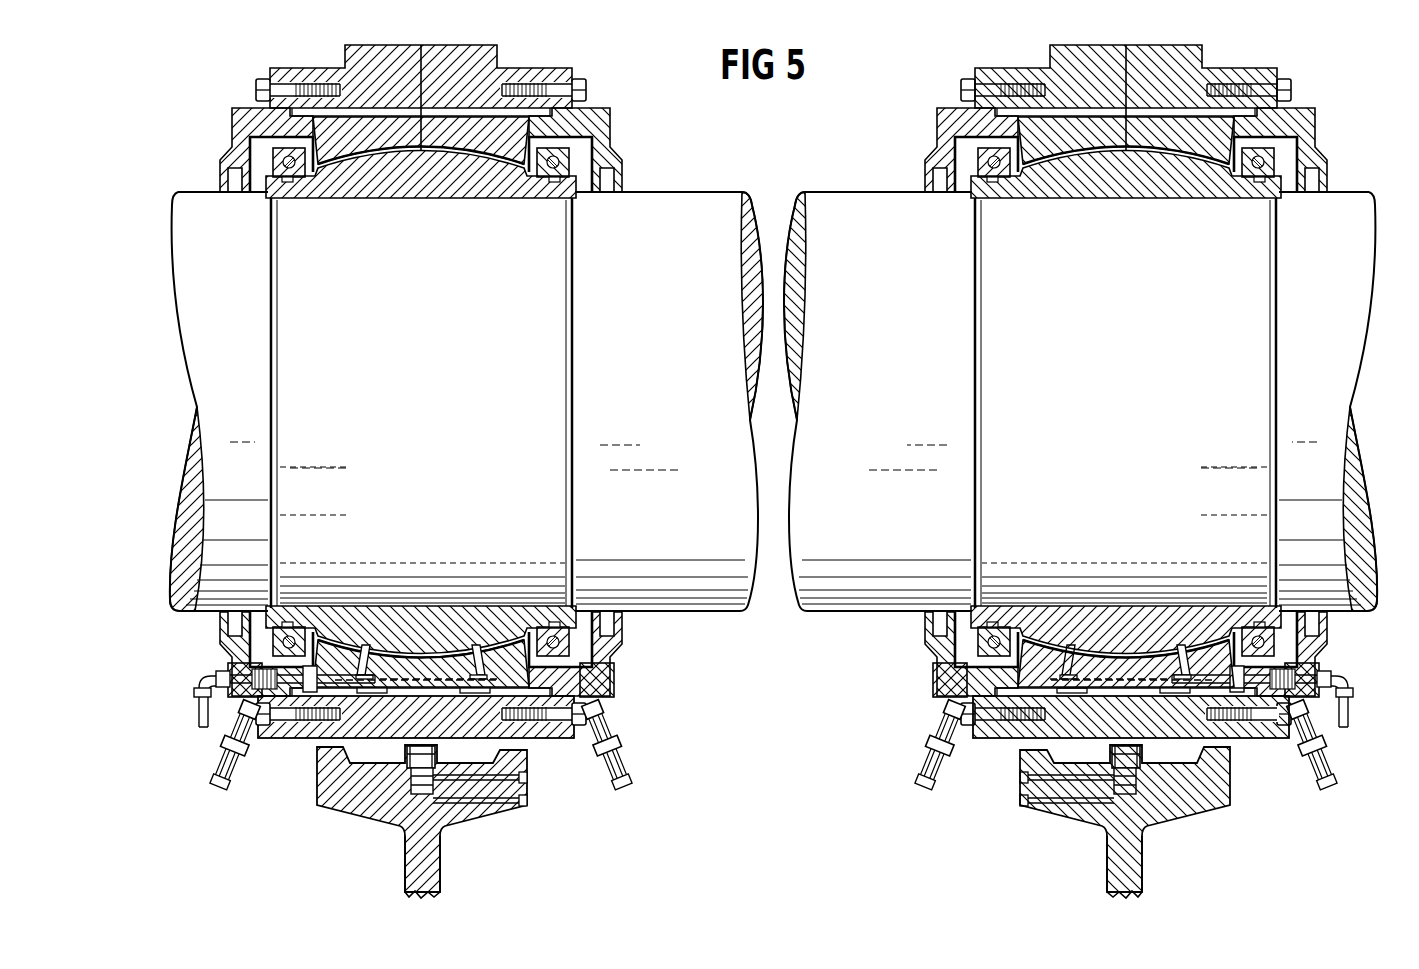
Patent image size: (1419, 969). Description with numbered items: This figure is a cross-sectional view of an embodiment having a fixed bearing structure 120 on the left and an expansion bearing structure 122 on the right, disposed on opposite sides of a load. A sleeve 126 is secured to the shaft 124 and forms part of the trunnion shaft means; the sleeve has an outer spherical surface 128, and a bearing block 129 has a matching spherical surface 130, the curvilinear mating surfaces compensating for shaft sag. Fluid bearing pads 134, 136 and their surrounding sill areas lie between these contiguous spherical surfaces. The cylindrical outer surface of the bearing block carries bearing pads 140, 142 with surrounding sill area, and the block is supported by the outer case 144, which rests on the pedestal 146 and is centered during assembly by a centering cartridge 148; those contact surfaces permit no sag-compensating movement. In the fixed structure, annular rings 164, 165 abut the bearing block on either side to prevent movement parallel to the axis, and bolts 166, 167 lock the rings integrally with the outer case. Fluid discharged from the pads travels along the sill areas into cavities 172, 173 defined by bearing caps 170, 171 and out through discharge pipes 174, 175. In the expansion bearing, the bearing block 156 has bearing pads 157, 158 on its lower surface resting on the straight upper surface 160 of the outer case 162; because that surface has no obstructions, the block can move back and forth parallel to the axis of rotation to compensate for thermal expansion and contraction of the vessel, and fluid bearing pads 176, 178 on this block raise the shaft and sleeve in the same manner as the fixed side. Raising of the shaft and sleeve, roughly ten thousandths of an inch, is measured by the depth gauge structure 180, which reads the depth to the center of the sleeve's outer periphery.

The fixed bearing structure 120 is at (466, 471).
The expansion bearing structure 122 is at (1080, 467).
The shaft 124 is at (516, 391).
The sleeve 126 is at (400, 188).
The outer spherical surface 128 is at (448, 153).
The bearing block 129 is at (511, 650).
The spherical surface 130 is at (397, 598).
The fluid bearing pad 134 is at (363, 647).
The fluid bearing pad 136 is at (483, 647).
The bearing pad 140 is at (313, 743).
The bearing pad 142 is at (515, 738).
The outer case 144 is at (337, 812).
The pedestal 146 is at (428, 857).
The centering cartridge 148 is at (378, 748).
The bearing block 156 is at (1112, 661).
The bearing pad 157 is at (1027, 740).
The bearing pad 158 is at (1233, 740).
The upper surface 160 is at (947, 670).
The outer case 162 is at (1163, 733).
The annular ring 164 is at (540, 690).
The annular ring 165 is at (300, 738).
The bolt 166 is at (583, 713).
The bolt 167 is at (260, 725).
The bearing cap 170 is at (608, 680).
The bearing cap 171 is at (232, 660).
The cavity 172 is at (585, 646).
The cavity 173 is at (230, 643).
The discharge pipe 174 is at (612, 723).
The discharge pipe 175 is at (225, 758).
The fluid bearing pad 176 is at (1088, 647).
The fluid bearing pad 178 is at (1160, 643).
The depth gauge structure 180 is at (1117, 80).